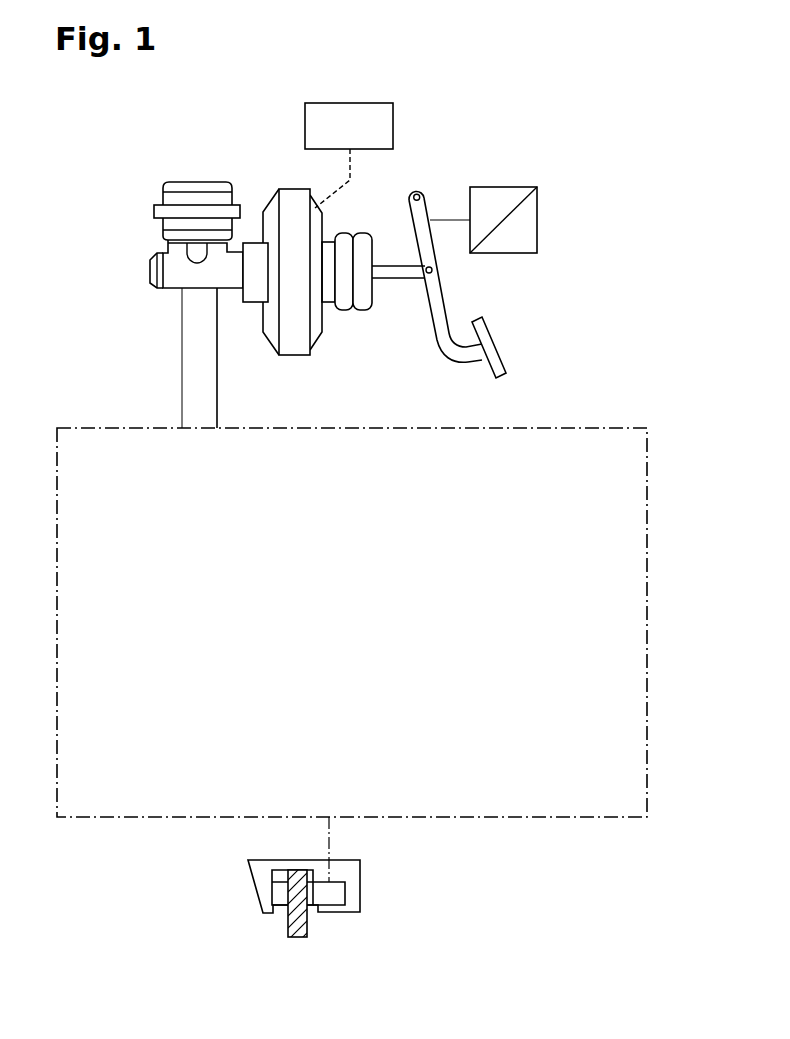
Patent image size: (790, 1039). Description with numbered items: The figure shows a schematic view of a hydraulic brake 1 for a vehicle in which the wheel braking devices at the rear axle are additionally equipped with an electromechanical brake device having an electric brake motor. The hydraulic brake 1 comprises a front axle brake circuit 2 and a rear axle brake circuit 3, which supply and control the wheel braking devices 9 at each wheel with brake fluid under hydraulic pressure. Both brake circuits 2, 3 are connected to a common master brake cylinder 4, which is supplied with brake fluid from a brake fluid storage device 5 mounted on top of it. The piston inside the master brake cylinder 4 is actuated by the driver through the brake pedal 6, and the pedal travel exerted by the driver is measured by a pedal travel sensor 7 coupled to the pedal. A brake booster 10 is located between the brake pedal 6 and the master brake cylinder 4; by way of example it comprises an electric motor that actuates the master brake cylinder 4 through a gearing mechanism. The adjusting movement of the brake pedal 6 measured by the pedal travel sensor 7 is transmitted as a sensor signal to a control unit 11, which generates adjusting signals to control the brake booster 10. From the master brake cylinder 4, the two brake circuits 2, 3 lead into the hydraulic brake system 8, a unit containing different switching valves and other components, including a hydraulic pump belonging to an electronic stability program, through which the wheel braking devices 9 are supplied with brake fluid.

The hydraulic brake 1 is at (512, 110).
The front axle brake circuit 2 is at (176, 388).
The rear axle brake circuit 3 is at (222, 388).
The master brake cylinder 4 is at (157, 272).
The brake fluid storage device 5 is at (163, 195).
The brake pedal 6 is at (488, 342).
The pedal travel sensor 7 is at (537, 218).
The hydraulic brake system 8 is at (647, 610).
The wheel braking device 9 is at (334, 942).
The brake booster 10 is at (318, 337).
The control unit 11 is at (305, 125).